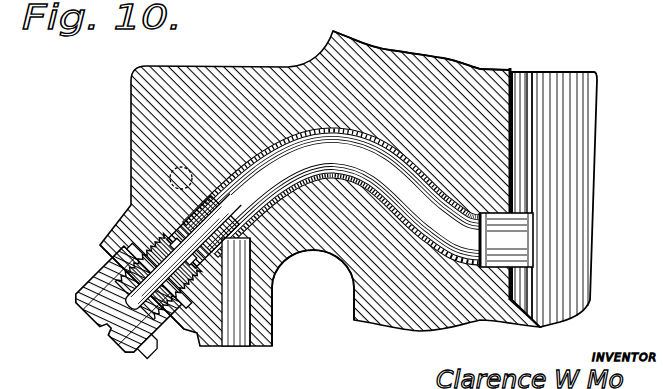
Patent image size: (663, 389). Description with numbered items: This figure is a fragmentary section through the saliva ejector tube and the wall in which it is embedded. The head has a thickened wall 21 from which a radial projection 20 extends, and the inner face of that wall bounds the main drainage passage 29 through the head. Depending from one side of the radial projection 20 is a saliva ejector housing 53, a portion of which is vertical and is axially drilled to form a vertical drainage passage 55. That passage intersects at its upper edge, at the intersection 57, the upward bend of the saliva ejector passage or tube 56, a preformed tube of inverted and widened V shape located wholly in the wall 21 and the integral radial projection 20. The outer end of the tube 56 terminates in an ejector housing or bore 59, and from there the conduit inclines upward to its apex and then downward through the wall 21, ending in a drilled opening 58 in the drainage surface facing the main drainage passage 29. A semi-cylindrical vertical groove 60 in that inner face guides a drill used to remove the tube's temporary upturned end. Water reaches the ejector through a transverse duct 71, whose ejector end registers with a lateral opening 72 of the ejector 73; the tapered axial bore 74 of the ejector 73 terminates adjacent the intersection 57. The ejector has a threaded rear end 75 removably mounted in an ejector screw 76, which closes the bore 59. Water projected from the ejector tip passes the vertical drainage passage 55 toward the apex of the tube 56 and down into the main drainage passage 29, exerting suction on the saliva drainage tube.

The radial projection 20 is at (221, 67).
The wall 21 is at (422, 65).
The main drainage passage 29 is at (573, 128).
The saliva ejector housing 53 is at (274, 317).
The vertical drainage passage 55 is at (233, 308).
The saliva ejector passage or tube 56 is at (328, 162).
The intersection 57 is at (257, 265).
The drilled opening 58 is at (535, 245).
The ejector housing or bore 59 is at (150, 240).
The semi-cylindrical vertical groove 60 is at (524, 168).
The transverse duct 71 is at (167, 190).
The lateral opening 72 is at (95, 262).
The ejector 73 is at (160, 213).
The tapered axial bore 74 is at (170, 168).
The threaded rear end 75 is at (141, 338).
The ejector screw 76 is at (86, 317).